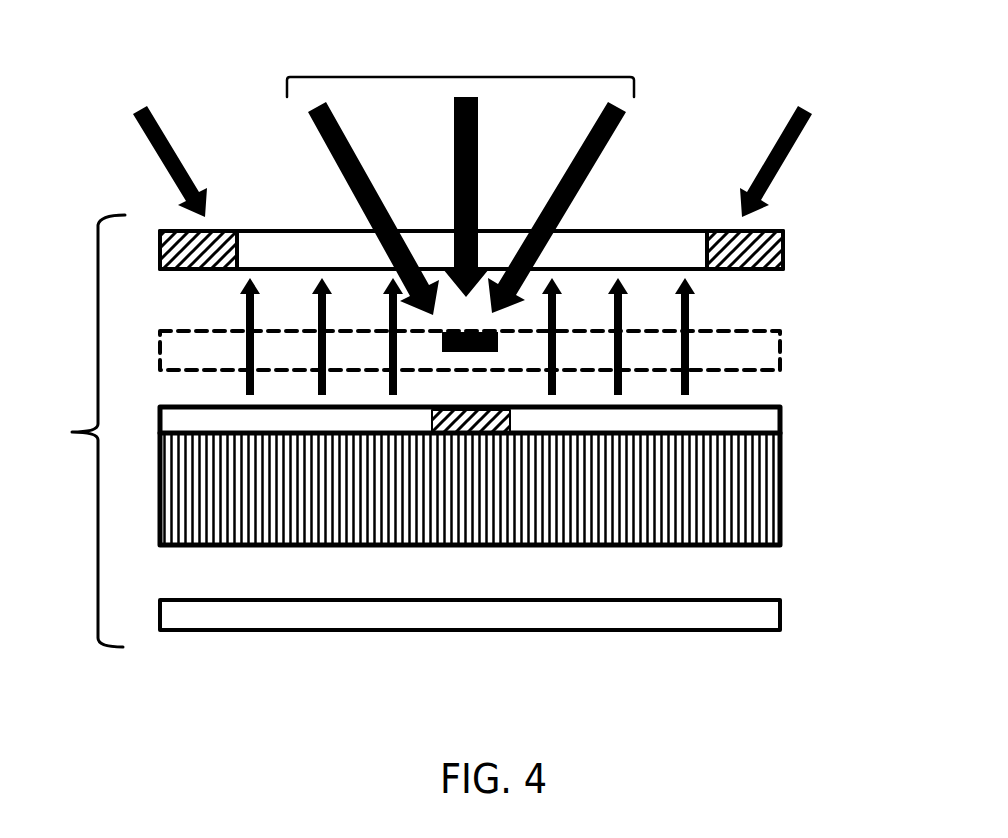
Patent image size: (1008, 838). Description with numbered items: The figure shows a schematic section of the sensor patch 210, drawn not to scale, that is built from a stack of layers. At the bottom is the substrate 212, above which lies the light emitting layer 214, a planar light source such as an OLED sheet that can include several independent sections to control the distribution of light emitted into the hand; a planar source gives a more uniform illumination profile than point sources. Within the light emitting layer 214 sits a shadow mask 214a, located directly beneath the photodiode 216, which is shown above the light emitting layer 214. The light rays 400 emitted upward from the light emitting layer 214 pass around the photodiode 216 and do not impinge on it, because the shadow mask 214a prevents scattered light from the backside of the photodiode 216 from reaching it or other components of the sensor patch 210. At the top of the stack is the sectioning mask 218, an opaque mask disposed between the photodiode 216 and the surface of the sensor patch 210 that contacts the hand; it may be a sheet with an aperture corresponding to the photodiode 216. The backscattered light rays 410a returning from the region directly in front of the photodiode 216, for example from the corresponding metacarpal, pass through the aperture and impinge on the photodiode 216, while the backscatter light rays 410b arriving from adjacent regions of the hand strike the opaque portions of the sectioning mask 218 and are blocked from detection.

The sensor patch 210 is at (65, 431).
The substrate 212 is at (782, 615).
The light emitting layer 214 is at (782, 528).
The shadow mask 214a is at (510, 420).
The photodiode 216 is at (498, 340).
The sectioning mask 218 is at (785, 258).
The light rays 400 is at (690, 302).
The backscattered light rays 410a is at (460, 77).
The backscatter light rays 410b is at (136, 106).